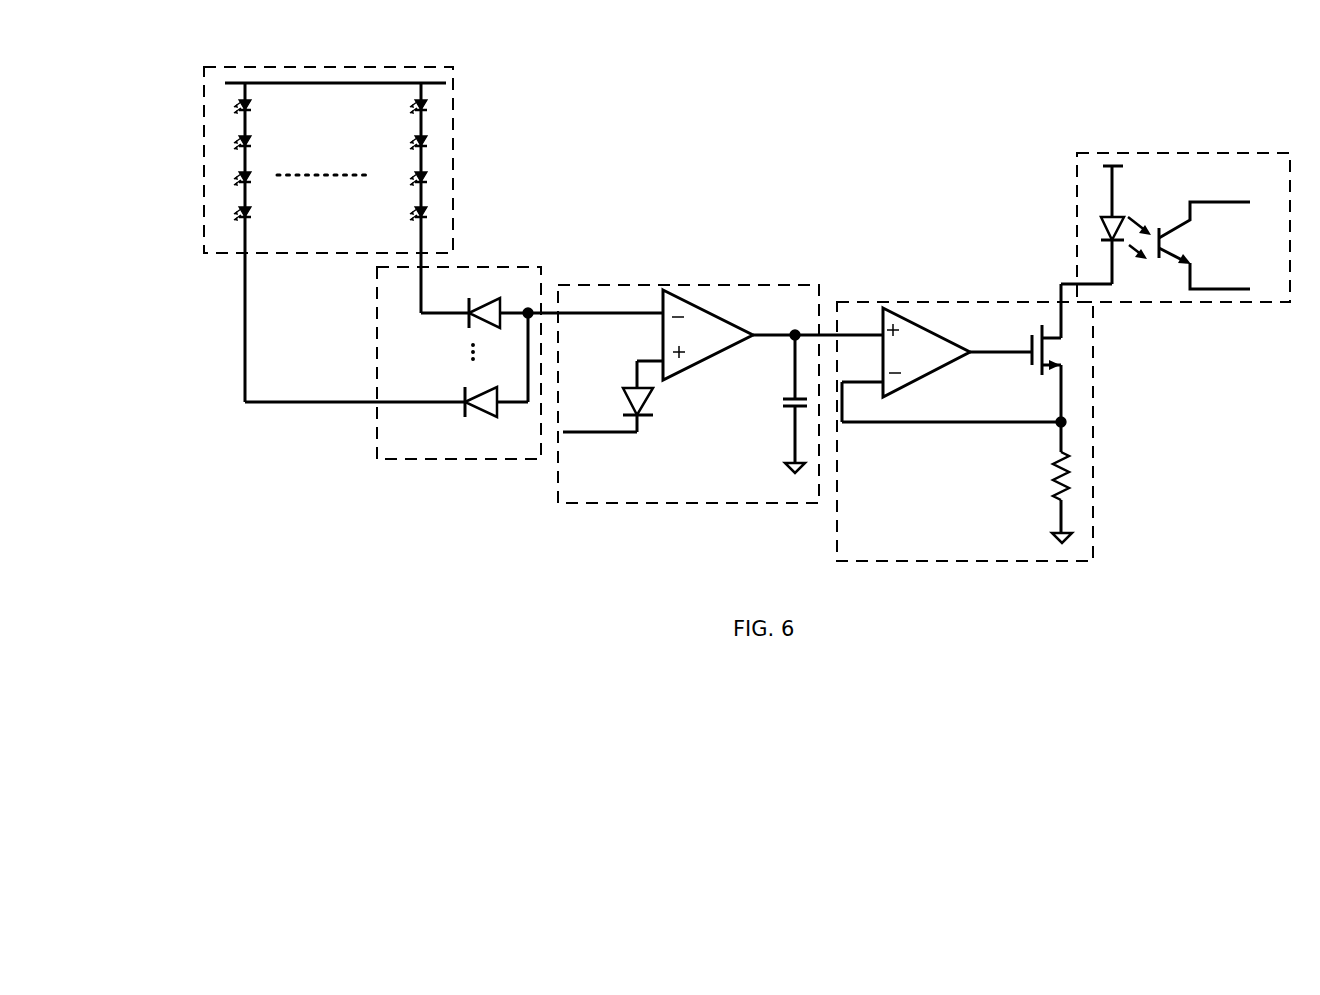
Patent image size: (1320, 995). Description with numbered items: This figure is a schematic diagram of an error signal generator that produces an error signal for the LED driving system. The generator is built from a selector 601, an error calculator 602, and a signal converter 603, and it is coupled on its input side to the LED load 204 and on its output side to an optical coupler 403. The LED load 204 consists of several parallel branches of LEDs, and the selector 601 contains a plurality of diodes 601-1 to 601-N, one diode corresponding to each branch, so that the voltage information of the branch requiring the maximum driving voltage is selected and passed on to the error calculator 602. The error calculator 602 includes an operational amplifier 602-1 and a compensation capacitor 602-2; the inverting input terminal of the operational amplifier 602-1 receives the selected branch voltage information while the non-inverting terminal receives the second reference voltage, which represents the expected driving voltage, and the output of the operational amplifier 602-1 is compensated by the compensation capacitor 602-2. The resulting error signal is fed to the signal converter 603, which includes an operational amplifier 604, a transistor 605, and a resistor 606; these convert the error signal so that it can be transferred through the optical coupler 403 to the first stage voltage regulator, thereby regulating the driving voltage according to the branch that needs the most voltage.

The LED load 204 is at (364, 242).
The selector 601 is at (454, 363).
The diode 601-1 is at (542, 300).
The diode 601-N is at (390, 374).
The error calculator 602 is at (720, 394).
The operational amplifier 602-1 is at (727, 344).
The compensation capacitor 602-2 is at (768, 404).
The signal converter 603 is at (965, 422).
The operational amplifier 604 is at (938, 362).
The transistor 605 is at (1027, 353).
The resistor 606 is at (1042, 482).
The optical coupler 403 is at (1279, 187).